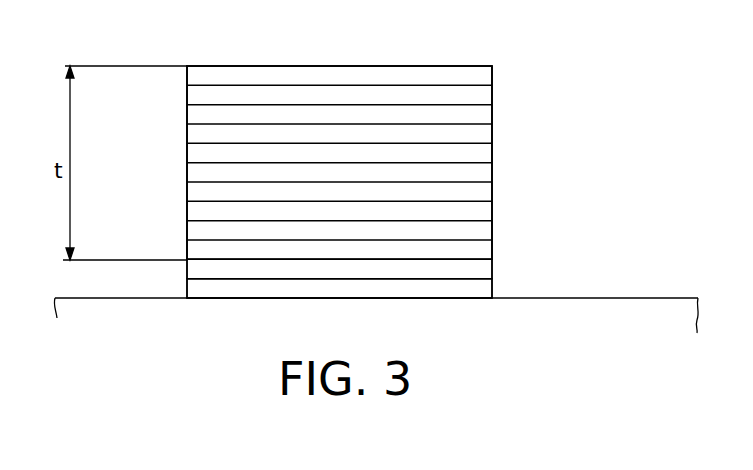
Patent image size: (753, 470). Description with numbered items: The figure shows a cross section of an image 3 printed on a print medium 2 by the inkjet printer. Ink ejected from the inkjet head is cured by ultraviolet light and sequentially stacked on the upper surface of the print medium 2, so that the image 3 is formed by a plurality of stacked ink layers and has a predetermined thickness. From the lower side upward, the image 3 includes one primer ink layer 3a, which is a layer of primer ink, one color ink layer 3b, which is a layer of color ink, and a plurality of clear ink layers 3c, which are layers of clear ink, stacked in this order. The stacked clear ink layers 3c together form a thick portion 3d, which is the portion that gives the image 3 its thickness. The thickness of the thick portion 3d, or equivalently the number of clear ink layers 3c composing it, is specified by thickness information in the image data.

The print medium 2 is at (645, 298).
The image 3 is at (335, 66).
The primer ink layer 3a is at (492, 290).
The color ink layer 3b is at (492, 270).
The clear ink layer 3c is at (492, 76).
The thick portion 3d is at (184, 67).